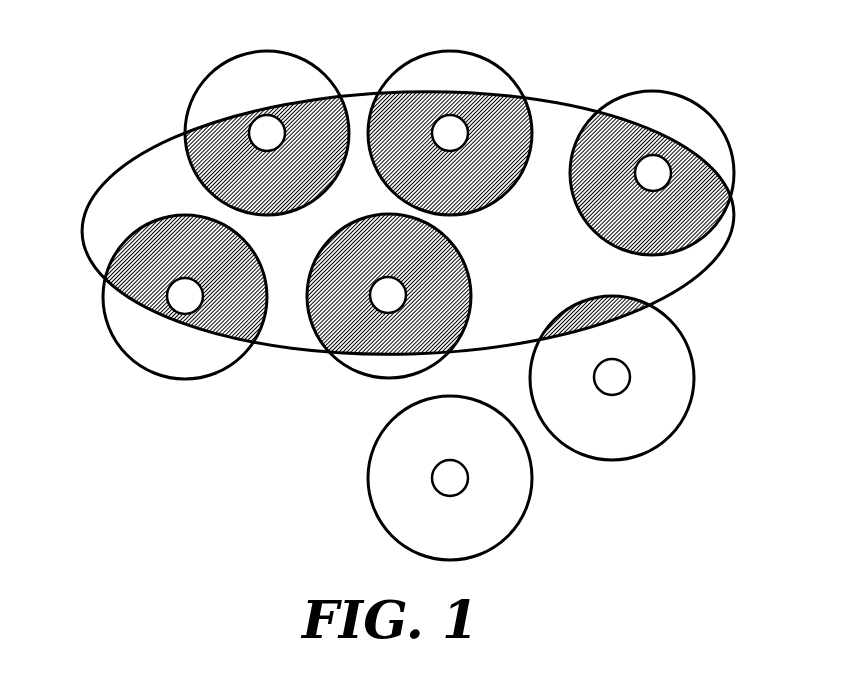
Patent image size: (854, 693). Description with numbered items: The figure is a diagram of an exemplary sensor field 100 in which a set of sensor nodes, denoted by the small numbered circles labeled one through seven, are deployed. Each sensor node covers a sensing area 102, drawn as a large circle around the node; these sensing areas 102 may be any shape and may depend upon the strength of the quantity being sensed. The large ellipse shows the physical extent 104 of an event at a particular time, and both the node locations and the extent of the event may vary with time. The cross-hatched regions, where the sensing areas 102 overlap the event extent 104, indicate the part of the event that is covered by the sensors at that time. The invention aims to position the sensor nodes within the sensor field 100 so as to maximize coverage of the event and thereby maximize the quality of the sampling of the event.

The sensor field 100 is at (113, 460).
The sensing area 102 is at (101, 293).
The physical extent of an event 104 is at (97, 182).